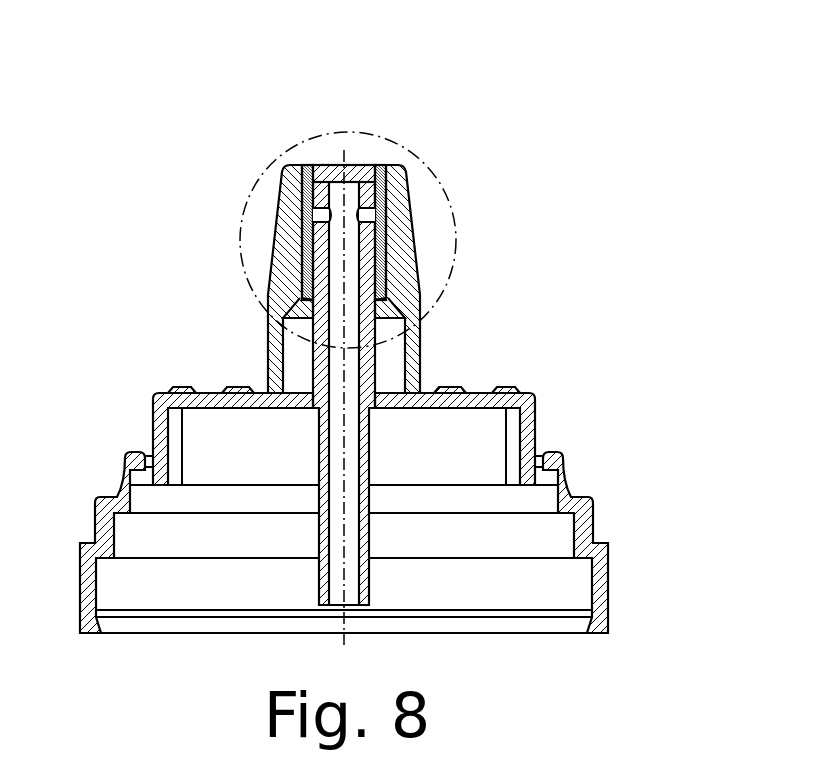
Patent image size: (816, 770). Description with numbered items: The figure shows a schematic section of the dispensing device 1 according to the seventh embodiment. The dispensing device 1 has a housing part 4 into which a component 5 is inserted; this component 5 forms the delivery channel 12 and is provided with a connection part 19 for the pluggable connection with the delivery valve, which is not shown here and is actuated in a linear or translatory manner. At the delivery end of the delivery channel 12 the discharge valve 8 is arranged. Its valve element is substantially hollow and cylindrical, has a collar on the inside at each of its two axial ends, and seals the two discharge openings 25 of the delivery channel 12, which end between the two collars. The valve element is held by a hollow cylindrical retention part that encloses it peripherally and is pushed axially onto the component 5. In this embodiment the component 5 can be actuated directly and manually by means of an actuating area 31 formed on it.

The dispensing device 1 is at (160, 187).
The housing part 4 is at (580, 497).
The component 5 is at (433, 183).
The discharge valve 8 is at (278, 220).
The delivery channel 12 is at (308, 343).
The connection part 19 is at (372, 567).
The discharge opening 25 is at (330, 178).
The actuating area 31 is at (205, 389).